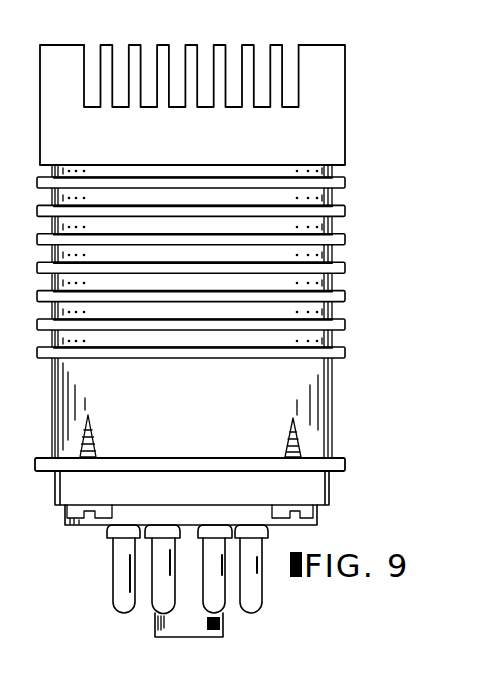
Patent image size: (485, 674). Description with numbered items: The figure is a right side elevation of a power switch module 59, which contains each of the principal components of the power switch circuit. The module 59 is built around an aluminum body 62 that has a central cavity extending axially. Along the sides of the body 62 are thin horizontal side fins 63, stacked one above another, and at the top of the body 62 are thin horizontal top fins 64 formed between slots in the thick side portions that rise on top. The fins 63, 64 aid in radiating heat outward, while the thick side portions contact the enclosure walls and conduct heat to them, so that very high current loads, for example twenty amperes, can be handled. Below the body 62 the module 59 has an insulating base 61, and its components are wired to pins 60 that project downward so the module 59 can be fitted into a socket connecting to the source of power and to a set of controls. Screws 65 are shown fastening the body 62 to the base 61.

The module 59 is at (220, 328).
The pins 60 is at (167, 563).
The insulating base 61 is at (318, 491).
The aluminum body 62 is at (198, 234).
The side fins 63 is at (346, 249).
The top fins 64 is at (278, 48).
The mounting screws 65 is at (287, 437).